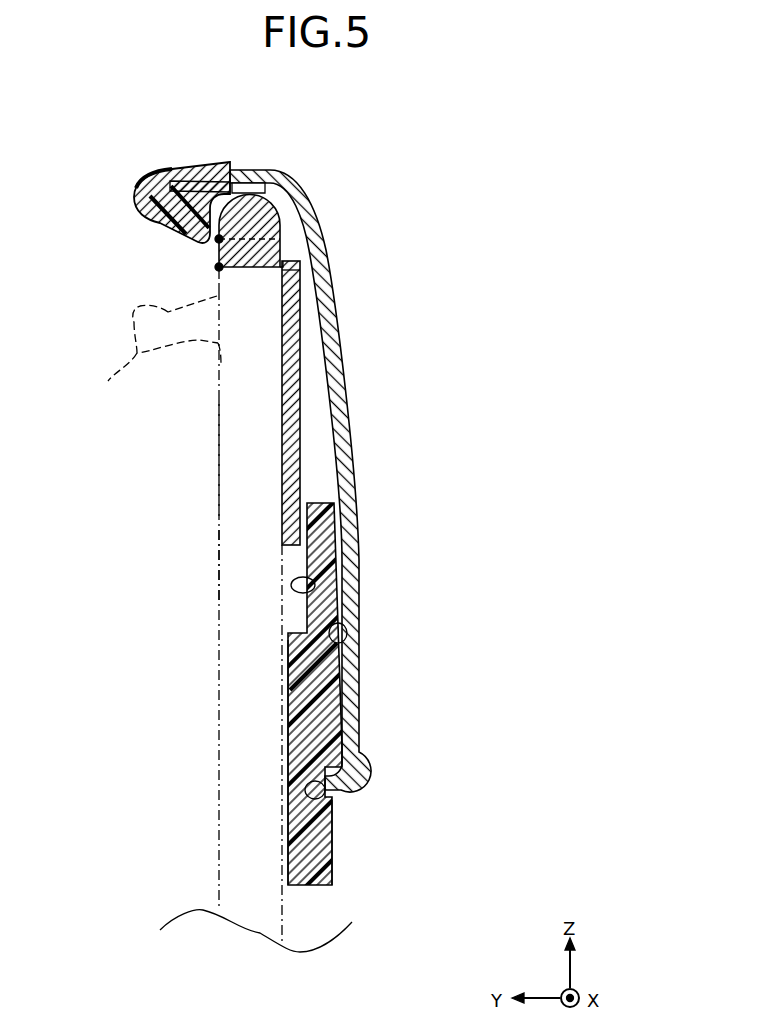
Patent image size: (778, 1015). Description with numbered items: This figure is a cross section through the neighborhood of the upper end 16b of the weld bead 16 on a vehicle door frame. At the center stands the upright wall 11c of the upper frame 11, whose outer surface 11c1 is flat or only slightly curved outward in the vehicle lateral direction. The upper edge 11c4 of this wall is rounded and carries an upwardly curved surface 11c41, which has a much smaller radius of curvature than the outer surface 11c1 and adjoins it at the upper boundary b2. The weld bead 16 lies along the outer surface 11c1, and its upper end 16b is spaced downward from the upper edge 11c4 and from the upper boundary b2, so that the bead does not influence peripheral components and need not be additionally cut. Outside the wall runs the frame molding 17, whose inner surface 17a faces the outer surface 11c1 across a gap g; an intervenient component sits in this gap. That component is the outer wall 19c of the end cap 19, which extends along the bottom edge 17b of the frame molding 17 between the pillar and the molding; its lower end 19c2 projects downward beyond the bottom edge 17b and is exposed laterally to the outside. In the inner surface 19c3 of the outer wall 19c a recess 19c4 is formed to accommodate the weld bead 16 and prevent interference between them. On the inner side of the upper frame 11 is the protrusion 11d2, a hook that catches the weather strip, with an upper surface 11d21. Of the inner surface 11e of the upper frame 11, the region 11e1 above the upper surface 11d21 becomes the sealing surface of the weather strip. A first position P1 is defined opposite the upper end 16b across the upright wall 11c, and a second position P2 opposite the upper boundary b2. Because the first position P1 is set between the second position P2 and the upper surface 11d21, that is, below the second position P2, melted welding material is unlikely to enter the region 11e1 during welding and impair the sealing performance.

The upper frame 11 is at (211, 732).
The upright wall 11c is at (235, 553).
The outer surface 11c1 is at (298, 543).
The upper edge 11c4 is at (210, 161).
The curved surface 11c41 is at (248, 182).
The protrusion 11d2 is at (153, 368).
The upper surface 11d21 is at (150, 304).
The inner surface 11e is at (219, 476).
The region 11e1 is at (217, 283).
The weld bead 16 is at (308, 330).
The upper end 16b is at (300, 265).
The frame molding 17 is at (304, 178).
The inner surface 17a is at (347, 632).
The bottom edge 17b is at (322, 800).
The end cap 19 is at (349, 682).
The outer wall 19c is at (330, 727).
The lower end 19c2 is at (317, 887).
The inner surface 19c3 is at (288, 833).
The recess 19c4 is at (312, 582).
The first position P1 is at (219, 267).
The second position P2 is at (219, 239).
The upper boundary b2 is at (283, 239).
The gap g is at (318, 456).